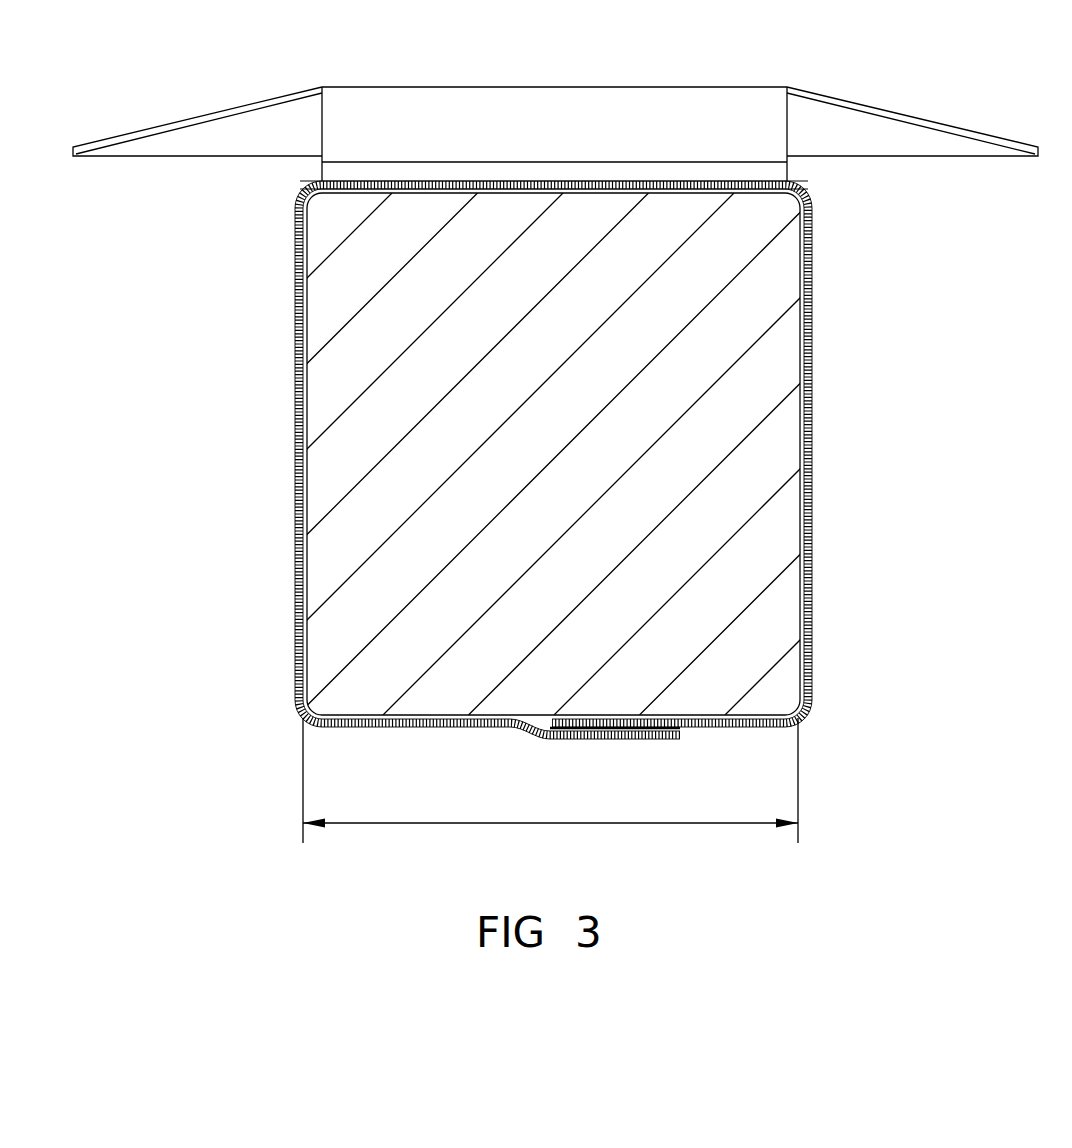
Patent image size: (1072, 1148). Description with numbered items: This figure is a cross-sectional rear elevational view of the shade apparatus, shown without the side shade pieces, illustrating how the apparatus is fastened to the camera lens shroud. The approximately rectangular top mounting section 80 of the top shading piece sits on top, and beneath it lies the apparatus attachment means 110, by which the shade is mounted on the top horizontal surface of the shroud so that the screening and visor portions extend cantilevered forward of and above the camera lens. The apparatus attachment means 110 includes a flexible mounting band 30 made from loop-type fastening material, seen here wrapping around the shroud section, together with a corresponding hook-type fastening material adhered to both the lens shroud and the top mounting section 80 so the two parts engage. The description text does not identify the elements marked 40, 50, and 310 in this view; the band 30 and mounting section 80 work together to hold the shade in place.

The flexible mounting band 30 is at (815, 302).
The fastener tab 40 is at (625, 730).
The foam core 50 is at (601, 190).
The top mounting section 80 is at (660, 162).
The apparatus attachment means 110 is at (404, 185).
The width dimension 310 is at (443, 822).